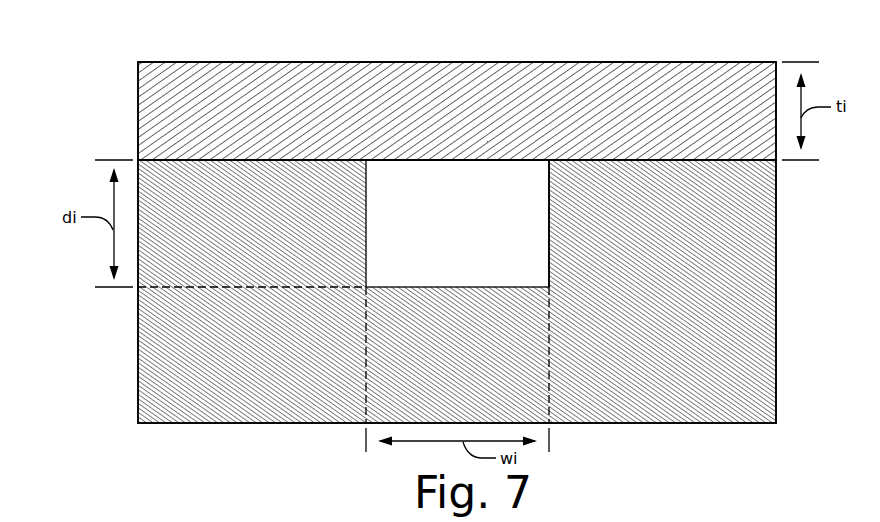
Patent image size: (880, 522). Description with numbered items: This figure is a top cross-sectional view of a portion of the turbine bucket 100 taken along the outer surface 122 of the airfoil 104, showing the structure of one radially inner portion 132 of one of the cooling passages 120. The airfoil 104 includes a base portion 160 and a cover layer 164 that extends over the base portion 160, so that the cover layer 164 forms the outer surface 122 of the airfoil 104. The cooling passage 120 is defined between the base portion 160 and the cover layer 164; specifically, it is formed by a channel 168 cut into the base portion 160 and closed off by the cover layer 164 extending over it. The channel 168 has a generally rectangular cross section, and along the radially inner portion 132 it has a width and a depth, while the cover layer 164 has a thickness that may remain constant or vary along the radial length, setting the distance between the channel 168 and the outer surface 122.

The turbine bucket 100 is at (121, 27).
The airfoil 104 is at (124, 521).
The cooling passage 120 is at (457, 223).
The radially inner portion 132 is at (421, 236).
The outer surface 122 is at (551, 62).
The base portion 160 is at (138, 372).
The cover layer 164 is at (138, 108).
The channel 168 is at (550, 258).